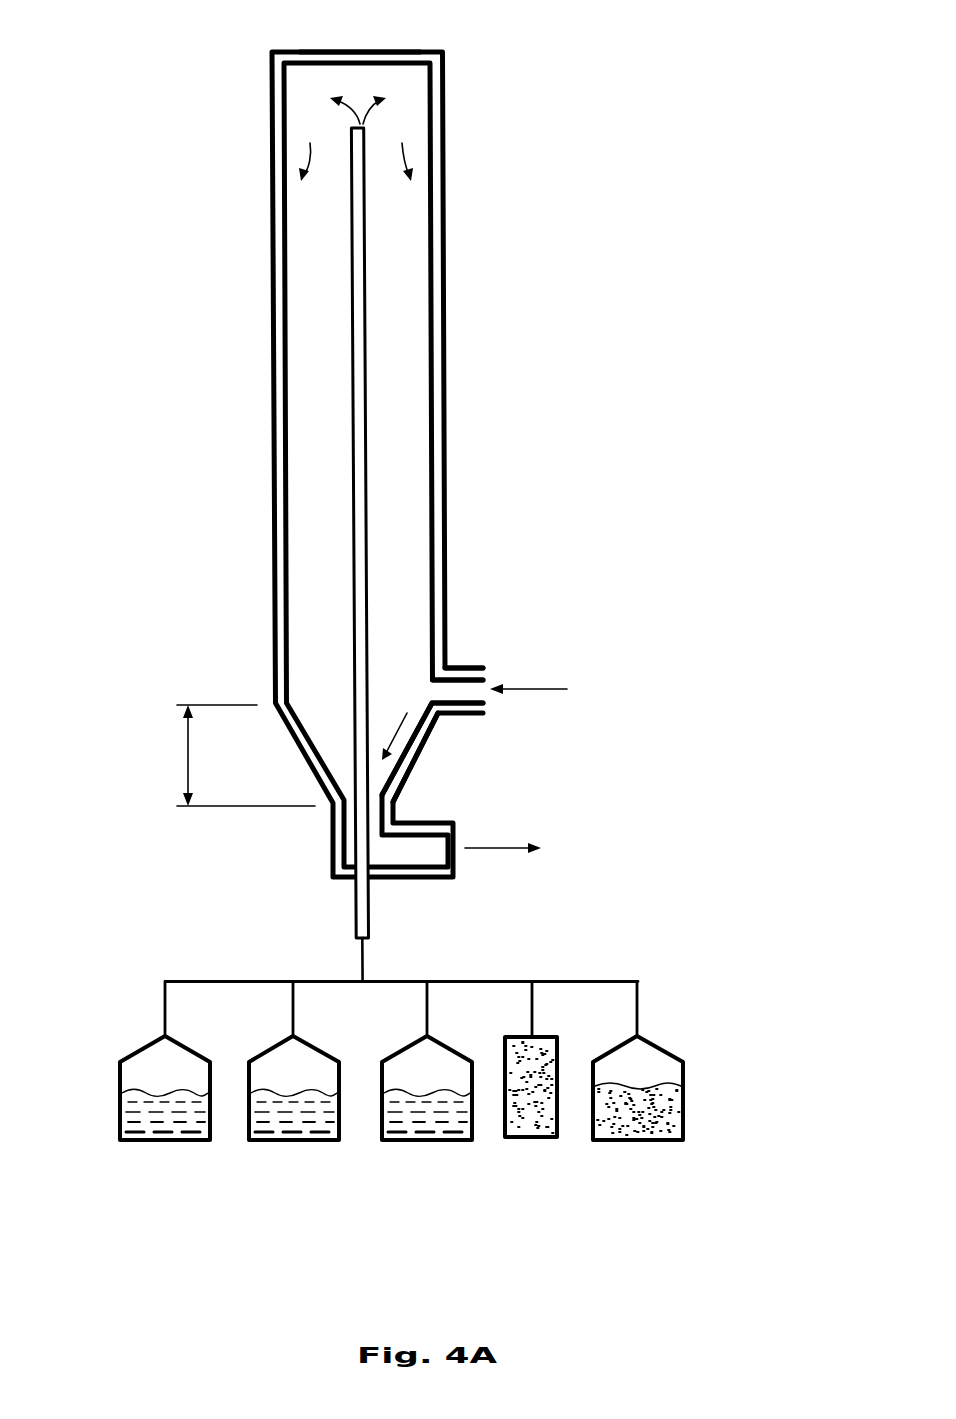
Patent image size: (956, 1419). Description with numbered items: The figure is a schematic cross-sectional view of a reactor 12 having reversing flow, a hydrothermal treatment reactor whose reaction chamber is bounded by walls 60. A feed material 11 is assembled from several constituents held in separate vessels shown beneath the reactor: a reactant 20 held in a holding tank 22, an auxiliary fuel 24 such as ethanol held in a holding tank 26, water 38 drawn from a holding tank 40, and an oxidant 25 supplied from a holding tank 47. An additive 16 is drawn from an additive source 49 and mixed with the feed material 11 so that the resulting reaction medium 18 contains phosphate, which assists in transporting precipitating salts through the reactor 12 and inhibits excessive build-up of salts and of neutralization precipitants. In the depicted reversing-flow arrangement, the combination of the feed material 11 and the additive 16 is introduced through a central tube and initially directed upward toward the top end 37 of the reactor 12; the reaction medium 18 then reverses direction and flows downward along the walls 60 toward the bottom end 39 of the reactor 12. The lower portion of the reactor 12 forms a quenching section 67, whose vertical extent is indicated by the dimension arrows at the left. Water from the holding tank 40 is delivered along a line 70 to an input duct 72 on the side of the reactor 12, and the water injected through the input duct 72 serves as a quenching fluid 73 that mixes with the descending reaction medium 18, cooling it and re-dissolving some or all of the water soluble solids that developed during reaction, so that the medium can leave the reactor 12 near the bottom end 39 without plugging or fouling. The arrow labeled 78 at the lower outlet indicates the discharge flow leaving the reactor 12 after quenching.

The feed material 11 is at (475, 1202).
The reactor 12 is at (445, 226).
The additive 16 is at (665, 1112).
The reaction medium 18 is at (365, 113).
The reactant 20 is at (435, 1125).
The holding tank 22 is at (410, 1048).
The auxiliary fuel 24 is at (295, 1128).
The oxidant 25 is at (532, 1118).
The holding tank 26 is at (275, 1049).
The top end 37 is at (397, 51).
The water 38 is at (122, 1120).
The bottom end 39 is at (405, 791).
The holding tank 40 is at (138, 1049).
The holding tank 47 is at (548, 1037).
The additive source 49 is at (666, 1049).
The walls 60 is at (445, 350).
The quenching section 67 is at (187, 750).
The line 70 is at (533, 689).
The input duct 72 is at (467, 664).
The quenching fluid 73 is at (412, 736).
The outlet flow 78 is at (493, 849).